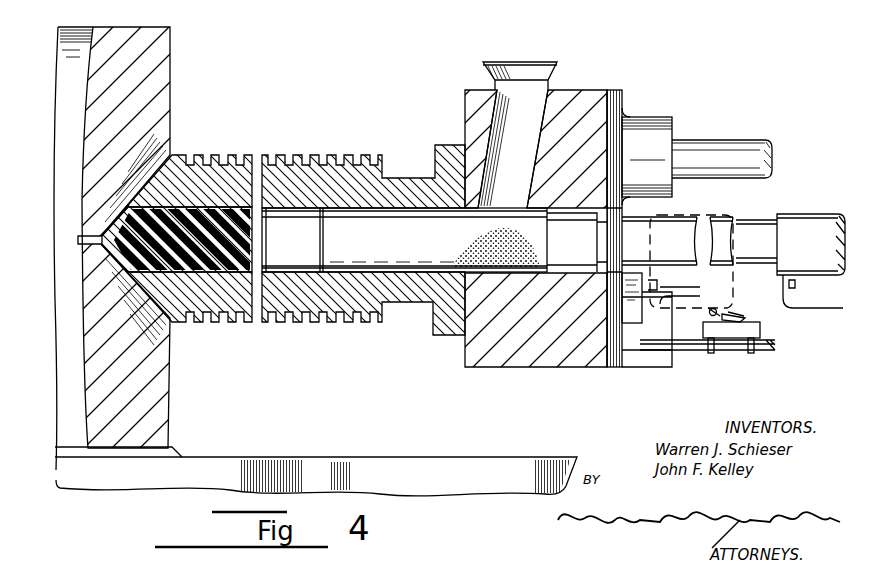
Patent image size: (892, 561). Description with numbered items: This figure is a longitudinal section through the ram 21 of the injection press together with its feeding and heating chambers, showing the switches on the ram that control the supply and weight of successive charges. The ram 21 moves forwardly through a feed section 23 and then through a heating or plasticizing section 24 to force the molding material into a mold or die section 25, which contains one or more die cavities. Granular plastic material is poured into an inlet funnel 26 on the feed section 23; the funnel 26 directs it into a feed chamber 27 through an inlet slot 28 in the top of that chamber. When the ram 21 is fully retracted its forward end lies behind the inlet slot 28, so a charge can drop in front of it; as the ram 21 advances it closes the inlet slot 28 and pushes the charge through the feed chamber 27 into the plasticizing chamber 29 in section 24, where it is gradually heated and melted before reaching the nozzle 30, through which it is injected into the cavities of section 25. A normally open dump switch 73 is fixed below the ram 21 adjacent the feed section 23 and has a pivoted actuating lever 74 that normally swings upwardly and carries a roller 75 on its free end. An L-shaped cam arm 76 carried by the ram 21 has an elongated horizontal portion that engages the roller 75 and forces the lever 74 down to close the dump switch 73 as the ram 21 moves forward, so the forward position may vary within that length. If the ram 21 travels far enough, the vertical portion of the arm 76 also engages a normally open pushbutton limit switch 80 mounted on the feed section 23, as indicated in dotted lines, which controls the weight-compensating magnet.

The ram 21 is at (657, 230).
The feed section 23 is at (479, 98).
The heating or plasticizing section 24 is at (220, 182).
The mold or die section 25 is at (150, 127).
The inlet funnel 26 is at (538, 63).
The feed chamber 27 is at (472, 232).
The inlet slot 28 is at (512, 178).
The plasticizing chamber 29 is at (283, 258).
The nozzle 30 is at (170, 326).
The dump switch 73 is at (732, 328).
The pivoted actuating lever 74 is at (730, 318).
The roller 75 is at (715, 309).
The L-shaped cam arm 76 is at (818, 310).
The pushbutton limit switch 80 is at (633, 313).